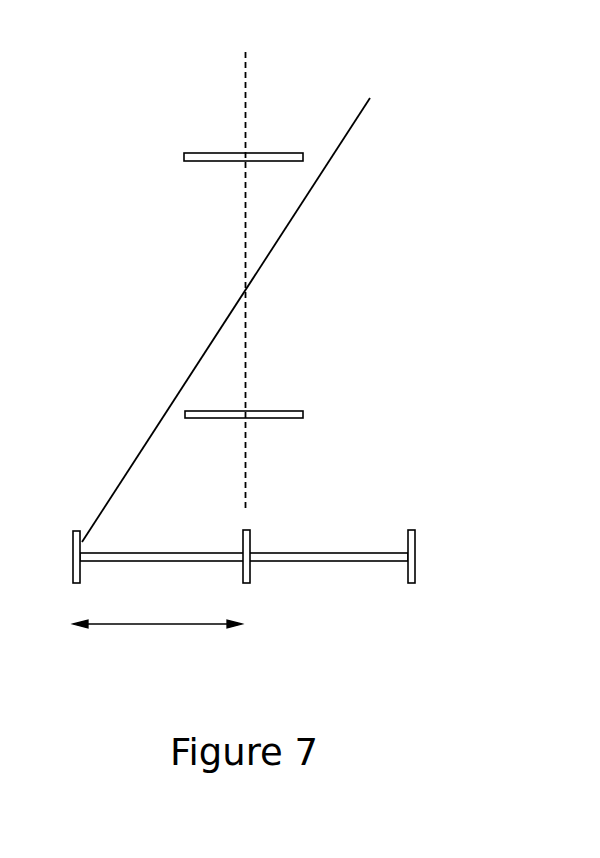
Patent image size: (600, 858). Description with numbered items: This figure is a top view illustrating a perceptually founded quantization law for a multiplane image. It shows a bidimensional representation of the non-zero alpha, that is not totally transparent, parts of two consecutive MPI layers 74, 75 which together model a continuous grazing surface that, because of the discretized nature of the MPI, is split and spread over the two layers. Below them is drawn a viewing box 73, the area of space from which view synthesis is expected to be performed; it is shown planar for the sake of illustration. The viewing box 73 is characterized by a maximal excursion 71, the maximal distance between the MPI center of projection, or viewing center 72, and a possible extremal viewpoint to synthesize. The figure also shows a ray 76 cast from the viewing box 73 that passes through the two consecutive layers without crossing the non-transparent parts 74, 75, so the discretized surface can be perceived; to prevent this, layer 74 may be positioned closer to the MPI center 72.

The maximal excursion 71 is at (156, 626).
The viewing center 72 is at (250, 560).
The viewing box 73 is at (415, 556).
The MPI layer 74 is at (184, 157).
The MPI layer 75 is at (303, 415).
The ray 76 is at (357, 121).